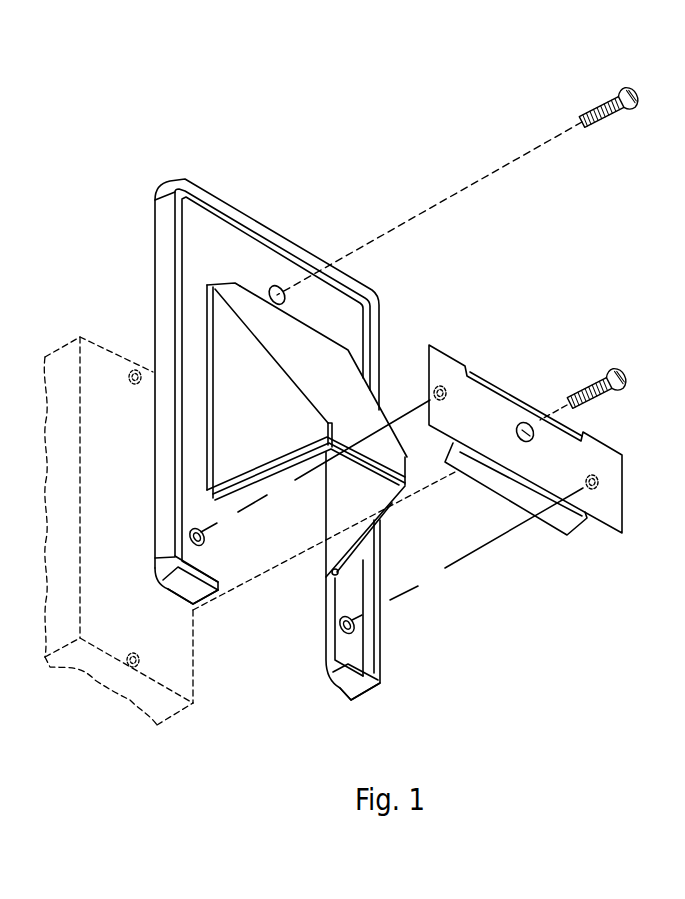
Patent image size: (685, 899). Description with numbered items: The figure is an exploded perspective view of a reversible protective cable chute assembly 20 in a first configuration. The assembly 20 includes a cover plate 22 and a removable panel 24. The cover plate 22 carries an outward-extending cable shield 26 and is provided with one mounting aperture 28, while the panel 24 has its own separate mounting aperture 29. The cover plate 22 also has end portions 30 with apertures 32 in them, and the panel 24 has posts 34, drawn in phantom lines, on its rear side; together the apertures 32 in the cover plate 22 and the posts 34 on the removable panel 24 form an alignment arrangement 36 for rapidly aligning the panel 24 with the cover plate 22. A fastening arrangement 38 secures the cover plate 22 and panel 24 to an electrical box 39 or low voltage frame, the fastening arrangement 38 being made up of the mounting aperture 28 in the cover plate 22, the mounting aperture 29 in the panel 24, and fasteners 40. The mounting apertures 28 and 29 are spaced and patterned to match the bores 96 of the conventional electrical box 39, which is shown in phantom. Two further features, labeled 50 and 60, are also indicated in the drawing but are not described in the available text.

The reversible protective cable chute assembly 20 is at (527, 645).
The cover plate 22 is at (279, 231).
The removable panel 24 is at (601, 535).
The cable shield 26 is at (307, 390).
The mounting aperture 28 is at (272, 290).
The mounting aperture 29 is at (517, 425).
The end portions 30 is at (197, 563).
The apertures 32 is at (167, 578).
The posts 34 is at (437, 388).
The alignment arrangement 36 is at (423, 382).
The fastening arrangement 38 is at (538, 102).
The electrical box 39 is at (120, 358).
The fasteners 40 is at (597, 100).
The opening 50 is at (270, 595).
The recess 60 is at (287, 507).
The bores 96 is at (133, 383).